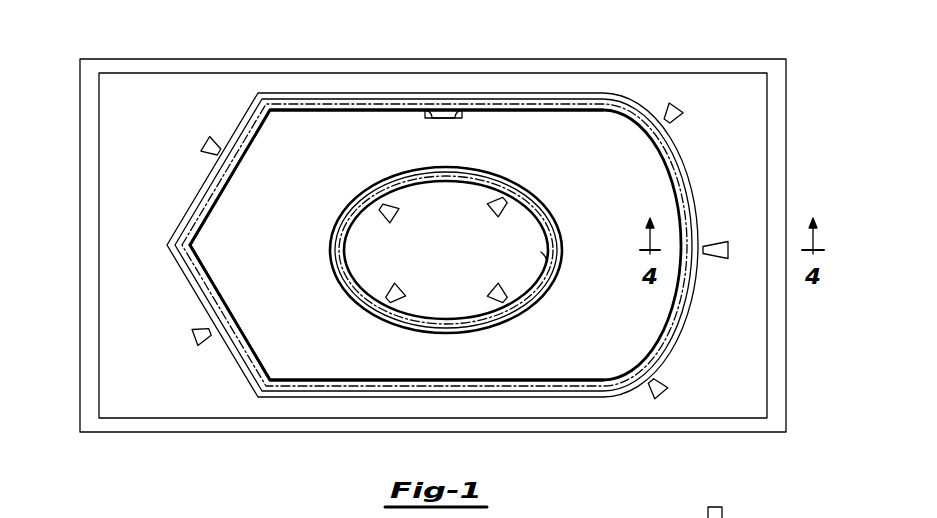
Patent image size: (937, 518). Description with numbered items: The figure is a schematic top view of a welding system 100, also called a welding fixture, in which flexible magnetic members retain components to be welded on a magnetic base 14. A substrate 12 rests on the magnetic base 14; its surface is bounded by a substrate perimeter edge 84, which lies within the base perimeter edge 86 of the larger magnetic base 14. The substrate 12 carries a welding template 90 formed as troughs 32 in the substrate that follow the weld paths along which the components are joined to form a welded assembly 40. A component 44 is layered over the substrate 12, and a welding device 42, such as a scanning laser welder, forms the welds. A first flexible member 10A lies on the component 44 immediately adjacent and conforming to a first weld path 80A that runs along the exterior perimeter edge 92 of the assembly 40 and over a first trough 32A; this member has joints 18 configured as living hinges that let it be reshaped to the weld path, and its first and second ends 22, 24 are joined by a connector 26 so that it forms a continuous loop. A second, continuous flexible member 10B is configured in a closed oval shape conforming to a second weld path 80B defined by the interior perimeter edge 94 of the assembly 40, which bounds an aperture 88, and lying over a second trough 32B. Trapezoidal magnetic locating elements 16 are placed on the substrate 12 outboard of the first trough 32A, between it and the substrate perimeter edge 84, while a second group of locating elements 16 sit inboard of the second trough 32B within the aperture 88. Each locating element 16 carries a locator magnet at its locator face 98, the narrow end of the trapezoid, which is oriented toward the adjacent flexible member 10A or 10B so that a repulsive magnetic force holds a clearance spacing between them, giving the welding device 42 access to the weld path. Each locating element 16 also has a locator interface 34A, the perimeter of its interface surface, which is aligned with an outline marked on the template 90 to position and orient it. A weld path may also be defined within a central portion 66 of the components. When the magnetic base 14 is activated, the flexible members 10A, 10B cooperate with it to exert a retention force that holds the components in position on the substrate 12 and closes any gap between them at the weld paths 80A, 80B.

The first flexible member 10A is at (229, 313).
The second flexible member 10B is at (549, 196).
The substrate 12 is at (767, 152).
The magnetic base 14 is at (688, 58).
The magnetic locating element 16 is at (204, 143).
The joint 18 is at (272, 113).
The first end 22 is at (427, 117).
The second end 24 is at (459, 117).
The connector 26 is at (443, 119).
The trough 32 is at (230, 353).
The first weld trough 32A is at (308, 399).
The second weld trough 32B is at (349, 258).
The locator interface 34A is at (214, 156).
The welded assembly 40 is at (265, 254).
The welding device 42 is at (723, 515).
The component 44 is at (520, 387).
The central portion 66 is at (652, 190).
The first weld path 80A is at (353, 398).
The second weld path 80B is at (467, 328).
The substrate perimeter edge 84 is at (99, 360).
The base perimeter edge 86 is at (80, 398).
The aperture 88 is at (436, 260).
The welding template 90 is at (170, 88).
The exterior perimeter edge 92 is at (322, 104).
The interior perimeter edge 94 is at (546, 258).
The locator face 98 is at (212, 320).
The welding system 100 is at (814, 72).